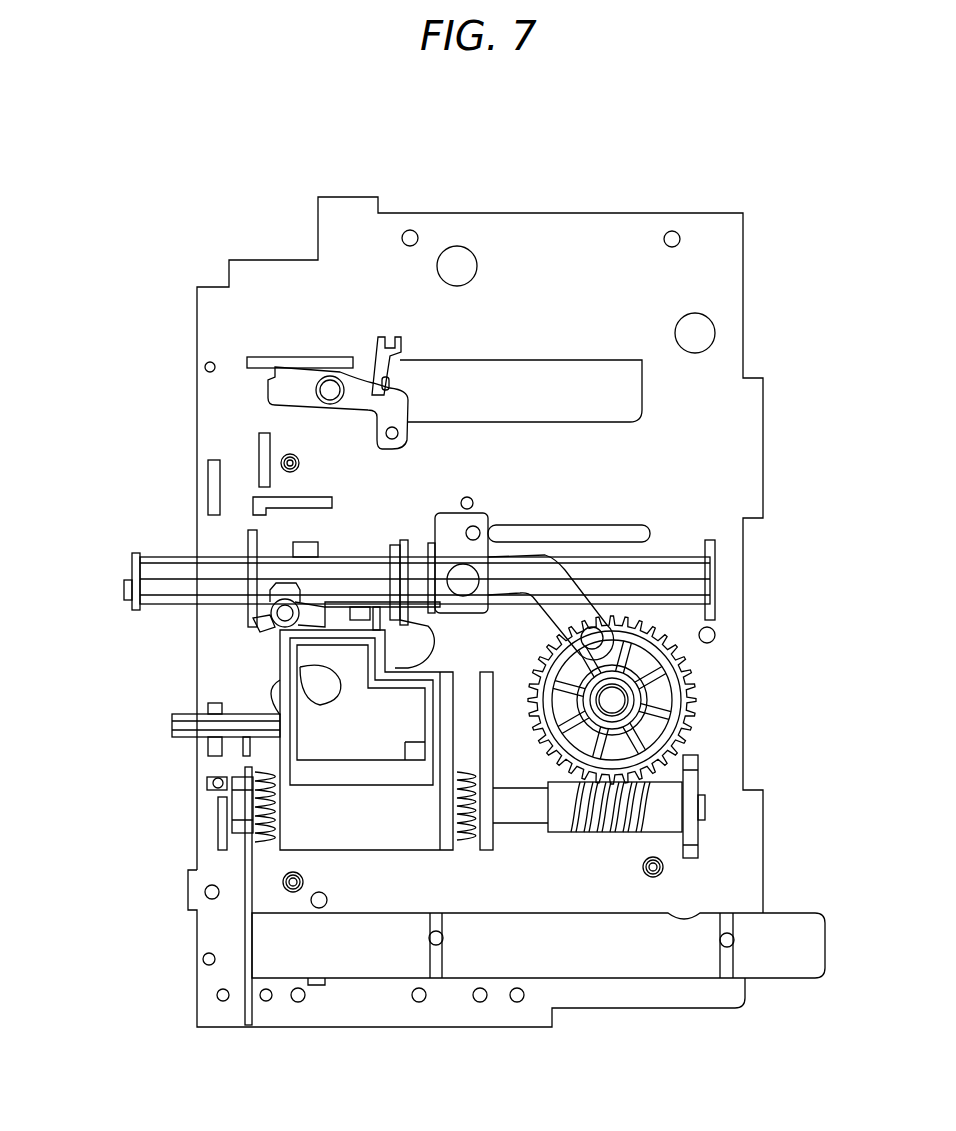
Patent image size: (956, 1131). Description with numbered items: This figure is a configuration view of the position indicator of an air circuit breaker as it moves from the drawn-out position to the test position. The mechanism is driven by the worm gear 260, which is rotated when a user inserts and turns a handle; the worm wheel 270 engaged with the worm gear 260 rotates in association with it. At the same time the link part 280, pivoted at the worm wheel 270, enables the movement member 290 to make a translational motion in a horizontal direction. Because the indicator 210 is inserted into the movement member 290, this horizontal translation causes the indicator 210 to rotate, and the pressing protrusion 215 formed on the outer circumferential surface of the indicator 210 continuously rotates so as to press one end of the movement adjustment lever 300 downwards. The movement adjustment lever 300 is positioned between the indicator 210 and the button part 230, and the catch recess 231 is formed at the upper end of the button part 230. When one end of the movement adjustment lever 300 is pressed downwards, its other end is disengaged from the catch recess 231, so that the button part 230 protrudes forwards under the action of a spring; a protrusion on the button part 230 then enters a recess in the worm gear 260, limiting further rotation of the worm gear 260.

The indicator 210 is at (160, 557).
The pressing protrusion 215 is at (248, 605).
The movement adjustment lever 300 is at (290, 618).
The catch recess 231 is at (330, 632).
The button part 230 is at (180, 740).
The movement member 290 is at (457, 525).
The link part 280 is at (563, 597).
The worm wheel 270 is at (697, 697).
The worm gear 260 is at (525, 812).